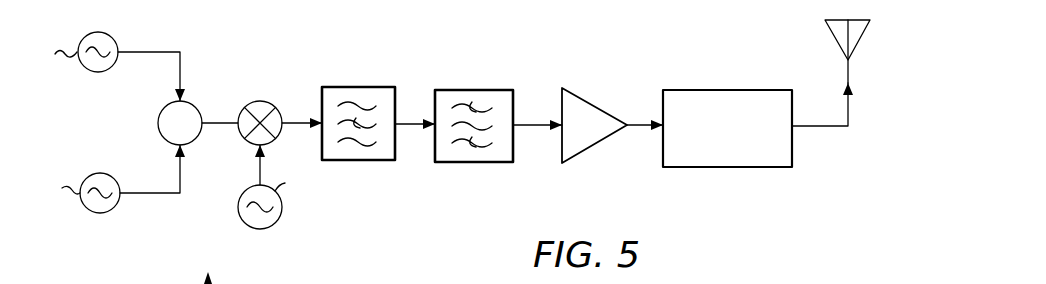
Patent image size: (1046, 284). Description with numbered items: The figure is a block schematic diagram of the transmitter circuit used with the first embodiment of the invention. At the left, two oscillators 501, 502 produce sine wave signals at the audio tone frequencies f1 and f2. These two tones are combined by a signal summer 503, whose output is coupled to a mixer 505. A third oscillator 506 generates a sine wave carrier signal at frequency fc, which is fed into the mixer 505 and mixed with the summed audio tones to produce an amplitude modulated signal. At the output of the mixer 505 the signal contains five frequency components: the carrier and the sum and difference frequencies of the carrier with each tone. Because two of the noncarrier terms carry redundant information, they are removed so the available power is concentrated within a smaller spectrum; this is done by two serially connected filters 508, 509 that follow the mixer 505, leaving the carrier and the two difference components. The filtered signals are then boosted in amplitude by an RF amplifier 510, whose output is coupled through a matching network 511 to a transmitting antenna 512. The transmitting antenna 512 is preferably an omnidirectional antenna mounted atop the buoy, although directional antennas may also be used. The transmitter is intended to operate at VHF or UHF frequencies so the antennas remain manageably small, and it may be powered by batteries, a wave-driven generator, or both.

The oscillator 501 is at (84, 36).
The oscillator 502 is at (94, 214).
The signal summer 503 is at (144, 132).
The mixer 505 is at (277, 107).
The oscillator 506 is at (253, 228).
The filter 508 is at (355, 87).
The filter 509 is at (475, 90).
The RF amplifier 510 is at (582, 151).
The matching network 511 is at (728, 168).
The transmitting antenna 512 is at (825, 27).